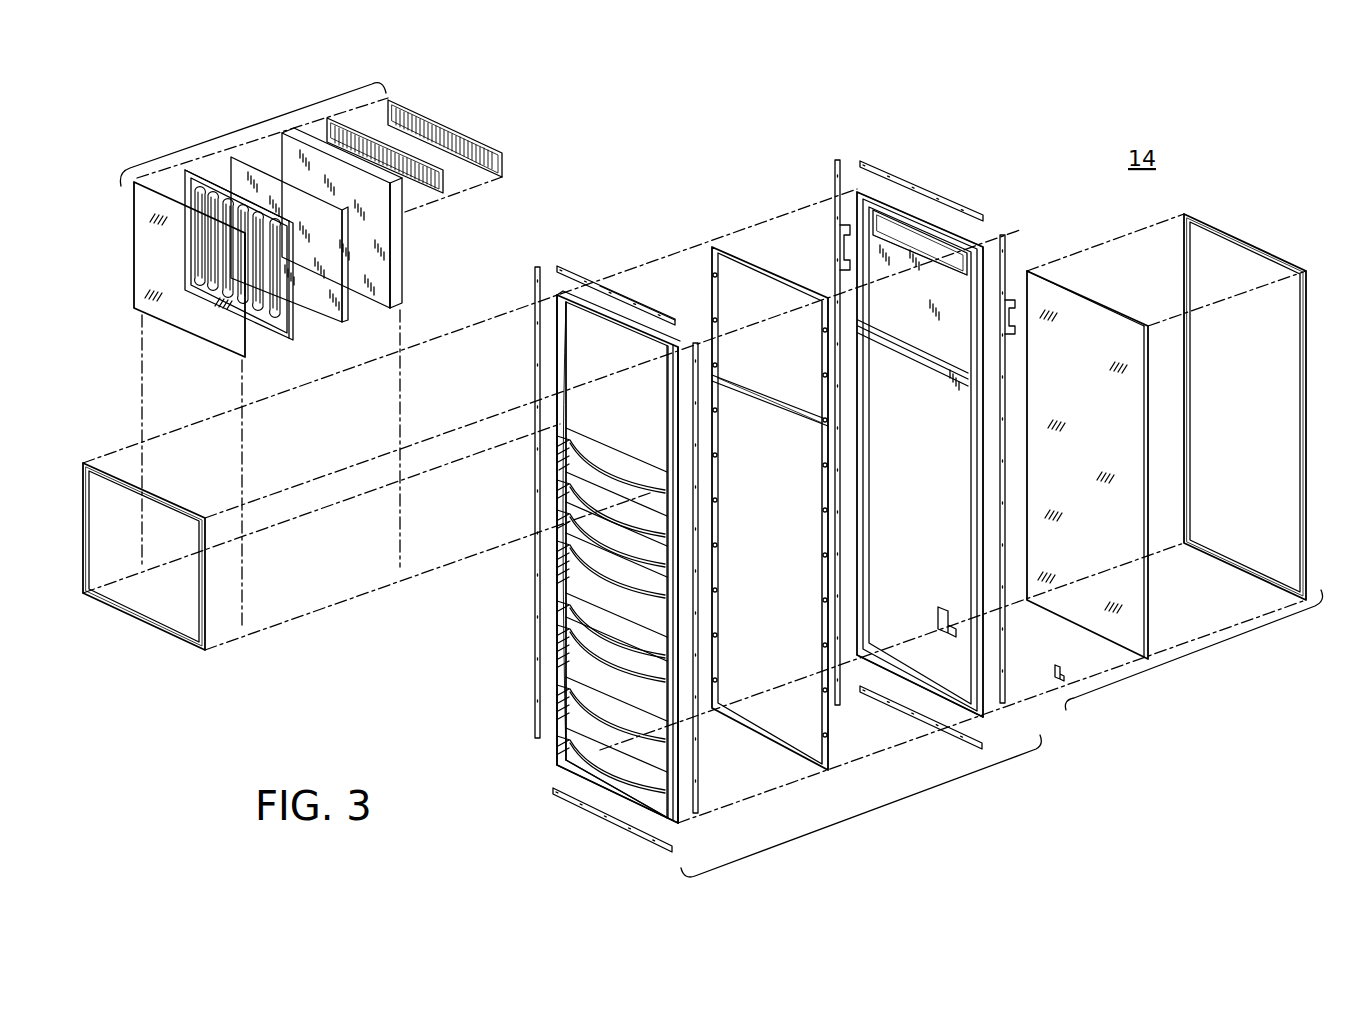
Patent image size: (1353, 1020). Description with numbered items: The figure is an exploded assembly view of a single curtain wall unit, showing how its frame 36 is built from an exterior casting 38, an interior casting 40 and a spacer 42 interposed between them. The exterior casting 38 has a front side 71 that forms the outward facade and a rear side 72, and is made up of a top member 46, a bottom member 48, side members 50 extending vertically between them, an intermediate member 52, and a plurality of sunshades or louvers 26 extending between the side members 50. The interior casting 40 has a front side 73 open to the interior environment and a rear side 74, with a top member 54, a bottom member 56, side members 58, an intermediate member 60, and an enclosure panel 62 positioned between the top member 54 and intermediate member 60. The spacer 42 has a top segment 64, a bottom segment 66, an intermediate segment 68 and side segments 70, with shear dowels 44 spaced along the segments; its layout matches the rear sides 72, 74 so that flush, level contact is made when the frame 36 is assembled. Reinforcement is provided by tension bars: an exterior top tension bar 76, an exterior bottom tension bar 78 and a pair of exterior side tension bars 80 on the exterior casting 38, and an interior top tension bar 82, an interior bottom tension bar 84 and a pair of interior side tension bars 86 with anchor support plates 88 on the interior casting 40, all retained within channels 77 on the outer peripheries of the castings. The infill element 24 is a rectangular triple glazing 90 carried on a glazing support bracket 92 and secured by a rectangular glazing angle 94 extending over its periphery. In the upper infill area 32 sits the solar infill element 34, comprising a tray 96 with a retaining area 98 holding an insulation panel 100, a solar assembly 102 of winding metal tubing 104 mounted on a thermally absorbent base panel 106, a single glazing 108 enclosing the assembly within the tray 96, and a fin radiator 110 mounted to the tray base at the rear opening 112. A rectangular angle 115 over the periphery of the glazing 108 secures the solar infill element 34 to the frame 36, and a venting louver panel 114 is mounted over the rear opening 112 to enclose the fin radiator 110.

The infill element 24 is at (1187, 668).
The sunshades or louvers 26 is at (614, 512).
The upper infill area 32 is at (722, 524).
The solar infill element 34 is at (250, 127).
The frame 36 is at (890, 800).
The exterior casting 38 is at (683, 823).
The interior casting 40 is at (986, 720).
The spacer 42 is at (832, 772).
The shear dowels 44 is at (830, 735).
The top member 46 is at (618, 337).
The bottom member 48 is at (560, 766).
The side members 50 is at (560, 370).
The intermediate member 52 is at (573, 595).
The top member 54 is at (902, 218).
The bottom member 56 is at (912, 670).
The side members 58 is at (960, 454).
The intermediate member 60 is at (908, 350).
The enclosure panel 62 is at (902, 312).
The top segment 64 is at (770, 514).
The bottom segment 66 is at (743, 730).
The intermediate segment 68 is at (750, 385).
The side segments 70 is at (717, 310).
The front side 71 is at (527, 348).
The rear side 72 is at (661, 305).
The front side 73 is at (991, 214).
The rear side 74 is at (850, 275).
The exterior top reinforcement or tension bar 76 is at (560, 267).
The channels 77 is at (668, 347).
The exterior bottom reinforcement or tension bar 78 is at (567, 802).
The exterior side reinforcement or tension bars 80 is at (533, 667).
The interior top reinforcement or tension bar 82 is at (862, 163).
The interior bottom reinforcement or tension bar 84 is at (958, 735).
The interior side reinforcement or tension bars 86 is at (836, 195).
The anchor support plates 88 is at (1015, 318).
The triple glazing 90 is at (1099, 307).
The glazing support bracket 92 is at (940, 605).
The glazing angle 94 is at (1238, 235).
The tray 96 is at (402, 272).
The retaining area 98 is at (385, 238).
The insulation panel 100 is at (352, 310).
The solar assembly 102 is at (287, 283).
The winding metal tubing 104 is at (300, 328).
The thermally absorbent base panel 106 is at (284, 333).
The single glazing 108 is at (163, 323).
The fin radiator 110 is at (443, 194).
The rear opening 112 is at (948, 268).
The venting louver panel 114 is at (502, 160).
The rectangular angle 115 is at (132, 478).